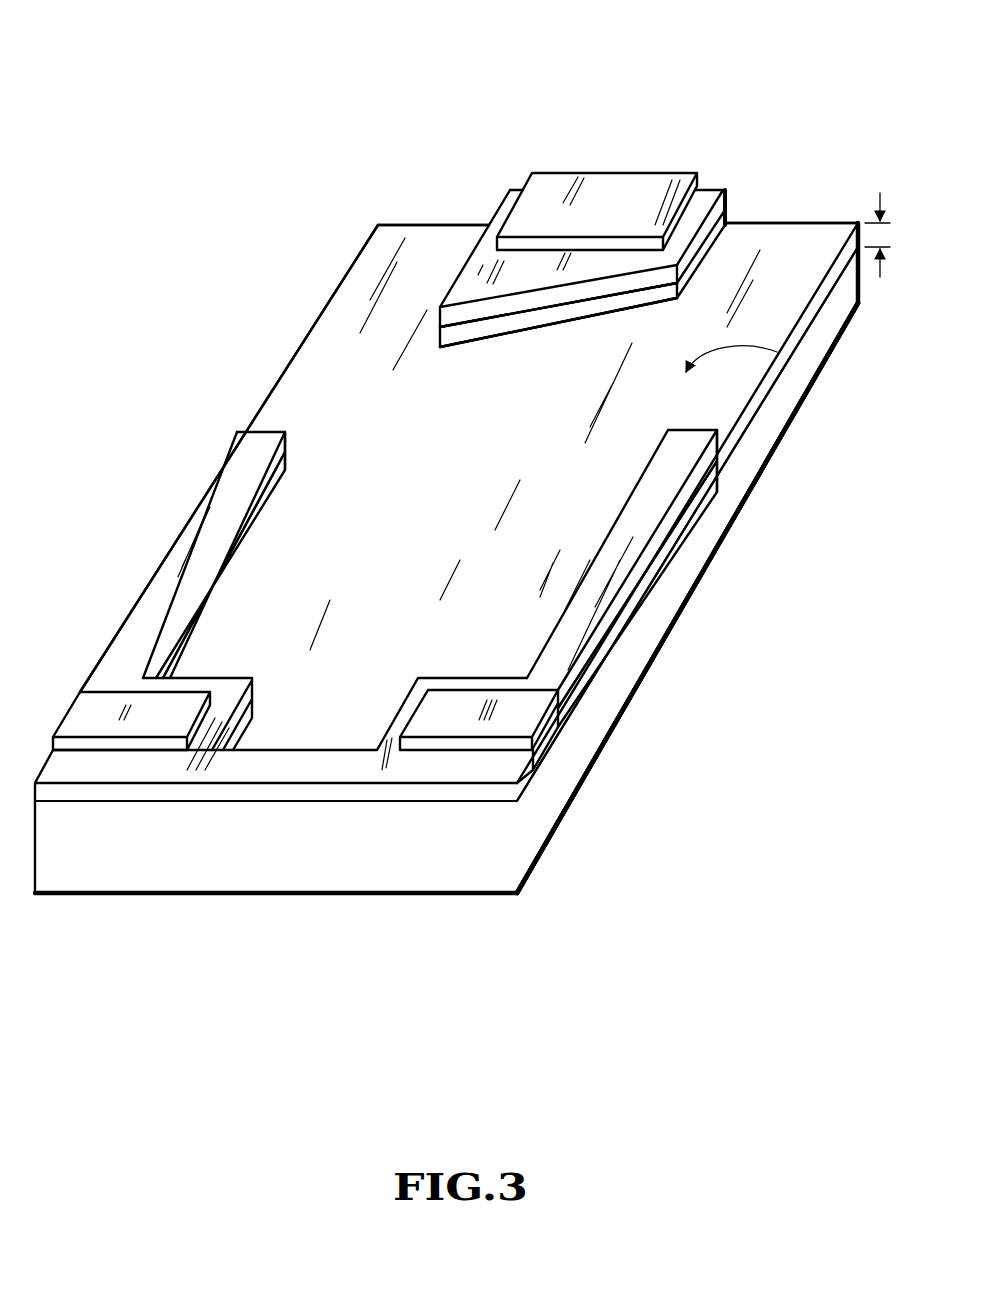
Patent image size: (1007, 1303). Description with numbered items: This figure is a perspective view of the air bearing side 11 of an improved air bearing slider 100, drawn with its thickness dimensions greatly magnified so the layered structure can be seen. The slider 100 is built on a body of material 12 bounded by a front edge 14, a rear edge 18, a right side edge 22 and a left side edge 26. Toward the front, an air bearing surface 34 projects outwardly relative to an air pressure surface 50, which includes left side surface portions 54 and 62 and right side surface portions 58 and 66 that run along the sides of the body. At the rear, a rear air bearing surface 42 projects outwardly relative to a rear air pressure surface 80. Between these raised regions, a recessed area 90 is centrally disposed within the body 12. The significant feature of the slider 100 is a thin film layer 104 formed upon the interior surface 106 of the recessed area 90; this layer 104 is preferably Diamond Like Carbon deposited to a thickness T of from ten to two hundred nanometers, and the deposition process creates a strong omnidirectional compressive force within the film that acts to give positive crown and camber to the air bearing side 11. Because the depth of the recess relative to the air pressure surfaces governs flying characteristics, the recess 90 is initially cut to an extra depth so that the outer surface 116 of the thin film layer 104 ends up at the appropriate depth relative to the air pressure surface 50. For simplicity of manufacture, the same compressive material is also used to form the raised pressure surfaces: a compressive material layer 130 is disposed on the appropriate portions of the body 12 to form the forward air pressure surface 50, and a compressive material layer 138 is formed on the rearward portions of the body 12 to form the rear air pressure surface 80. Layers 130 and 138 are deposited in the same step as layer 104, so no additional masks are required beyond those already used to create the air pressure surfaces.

The slider 100 is at (276, 47).
The air bearing side 11 is at (327, 253).
The body of material 12 is at (503, 324).
The front edge 14 is at (297, 855).
The rear edge 18 is at (779, 223).
The right side edge 22 is at (692, 562).
The left side edge 26 is at (316, 328).
The air bearing surface 34 is at (77, 708).
The rear air bearing surface 42 is at (565, 185).
The air pressure surface 50 is at (300, 748).
The left side surface portion 54 is at (225, 688).
The right side surface portion 58 is at (448, 685).
The left side surface portion 62 is at (213, 483).
The right side surface portion 66 is at (632, 510).
The rear air pressure surface 80 is at (483, 263).
The recessed area 90 is at (772, 353).
The thin film layer 104 is at (760, 415).
The interior surface 106 is at (818, 313).
The outer surface 116 is at (441, 532).
The compressive material layer 130 is at (272, 473).
The compressive material layer 138 is at (598, 287).
The thickness T is at (877, 221).